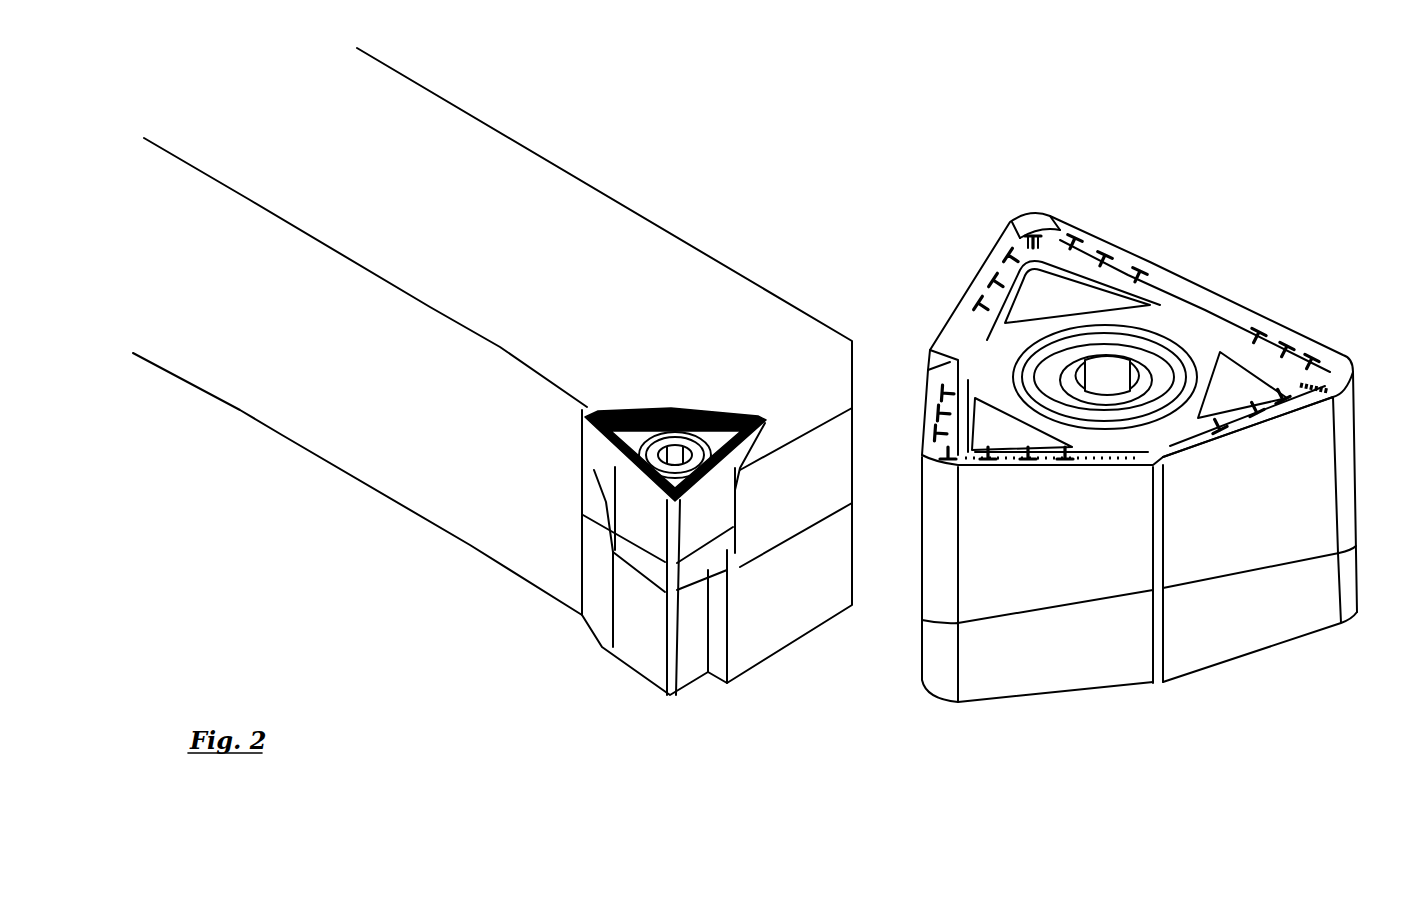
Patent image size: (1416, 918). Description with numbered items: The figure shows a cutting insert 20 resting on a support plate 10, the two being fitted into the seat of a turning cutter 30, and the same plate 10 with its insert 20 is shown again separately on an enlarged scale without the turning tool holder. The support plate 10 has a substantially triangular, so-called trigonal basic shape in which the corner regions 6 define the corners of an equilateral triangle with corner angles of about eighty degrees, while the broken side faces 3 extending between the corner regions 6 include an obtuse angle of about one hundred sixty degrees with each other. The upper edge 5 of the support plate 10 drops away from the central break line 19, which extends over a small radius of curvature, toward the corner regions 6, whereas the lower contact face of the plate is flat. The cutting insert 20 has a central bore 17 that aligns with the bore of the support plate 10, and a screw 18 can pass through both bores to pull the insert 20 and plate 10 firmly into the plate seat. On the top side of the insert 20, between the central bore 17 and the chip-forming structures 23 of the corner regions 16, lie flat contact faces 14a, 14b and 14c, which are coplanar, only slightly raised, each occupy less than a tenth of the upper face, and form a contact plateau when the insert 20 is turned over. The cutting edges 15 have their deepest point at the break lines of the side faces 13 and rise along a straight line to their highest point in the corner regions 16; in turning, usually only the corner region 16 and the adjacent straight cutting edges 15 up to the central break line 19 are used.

The turning cutter 30 is at (705, 276).
The chip-forming structures 23 is at (992, 262).
The flat contact face 14a is at (1078, 292).
The flat contact face 14b is at (1000, 422).
The flat contact face 14c is at (1243, 381).
The central bore 17 is at (1133, 323).
The screw 18 is at (1156, 369).
The corner region 16 is at (941, 542).
The corner region 6 is at (941, 653).
The cutting insert 20 is at (1087, 573).
The support plate 10 is at (1142, 640).
The central break line 19 is at (1162, 547).
The upper edge 5 is at (1232, 569).
The side faces 13 is at (1300, 485).
The side faces 3 is at (1303, 600).
The cutting edges 15 is at (1350, 360).